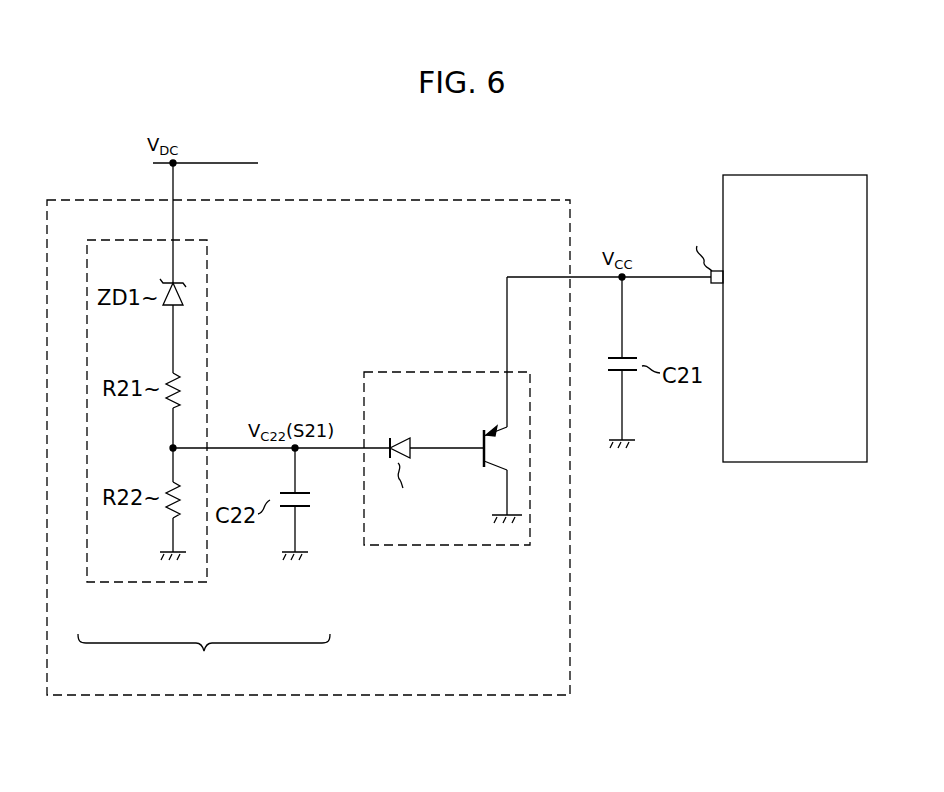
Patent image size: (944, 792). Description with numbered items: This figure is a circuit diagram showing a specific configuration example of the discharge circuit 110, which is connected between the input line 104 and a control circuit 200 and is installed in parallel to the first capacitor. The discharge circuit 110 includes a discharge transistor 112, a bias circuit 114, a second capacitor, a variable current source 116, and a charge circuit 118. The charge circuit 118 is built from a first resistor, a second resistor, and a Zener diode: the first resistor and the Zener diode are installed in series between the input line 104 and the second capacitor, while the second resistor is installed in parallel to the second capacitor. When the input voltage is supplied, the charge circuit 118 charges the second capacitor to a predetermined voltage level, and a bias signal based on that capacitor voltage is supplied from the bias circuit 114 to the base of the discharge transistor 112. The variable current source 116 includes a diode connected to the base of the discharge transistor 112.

The input line 104 is at (240, 163).
The discharge circuit 110 is at (330, 697).
The discharge transistor 112 is at (486, 477).
The bias circuit 114 is at (204, 657).
The variable current source 116 is at (455, 547).
The charge circuit 118 is at (136, 584).
The control circuit 200 is at (794, 175).